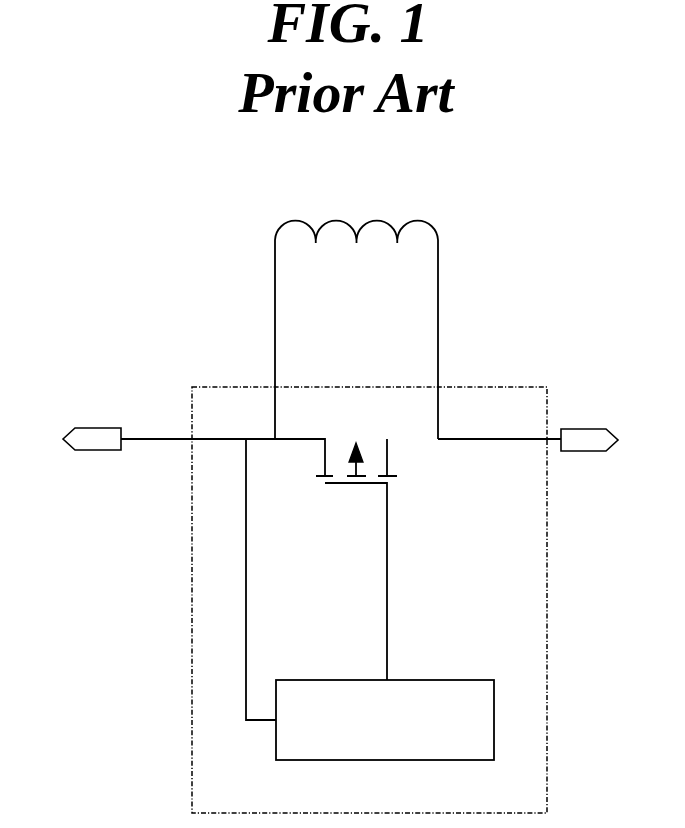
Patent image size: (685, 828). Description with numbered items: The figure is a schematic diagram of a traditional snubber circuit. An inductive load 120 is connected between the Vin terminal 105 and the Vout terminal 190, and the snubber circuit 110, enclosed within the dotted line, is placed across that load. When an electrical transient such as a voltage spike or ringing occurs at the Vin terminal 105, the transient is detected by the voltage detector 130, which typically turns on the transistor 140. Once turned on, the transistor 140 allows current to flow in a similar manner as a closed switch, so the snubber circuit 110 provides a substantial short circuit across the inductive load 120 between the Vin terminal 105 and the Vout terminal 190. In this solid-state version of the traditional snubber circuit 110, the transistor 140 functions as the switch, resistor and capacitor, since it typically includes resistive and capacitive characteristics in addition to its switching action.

The Vin terminal 105 is at (164, 445).
The snubber circuit 110 is at (369, 588).
The inductive load 120 is at (380, 329).
The voltage detector 130 is at (370, 599).
The transistor 140 is at (353, 546).
The Vout terminal 190 is at (536, 446).